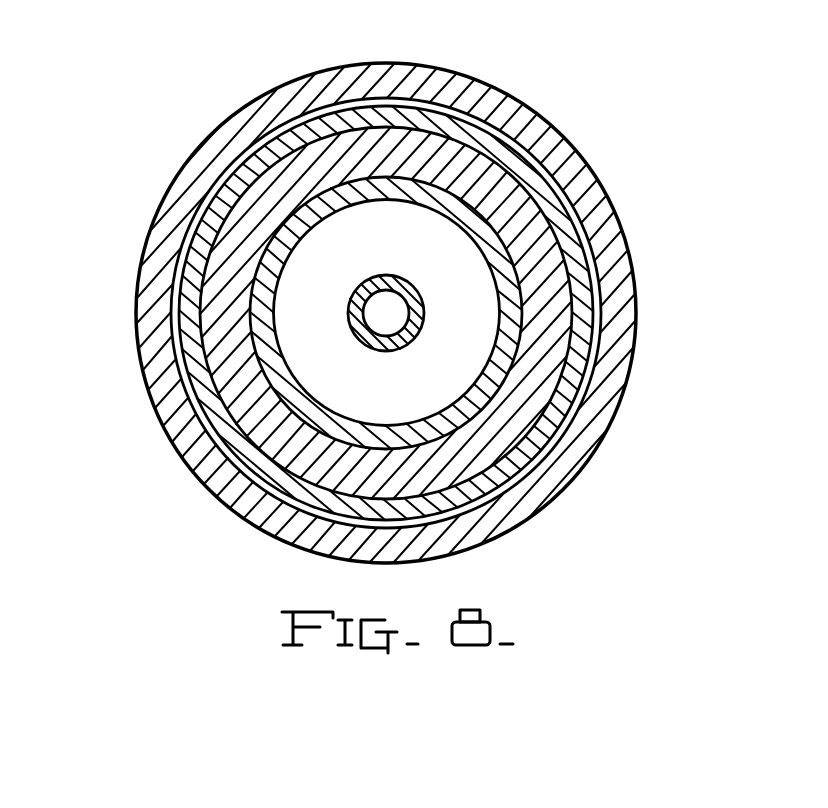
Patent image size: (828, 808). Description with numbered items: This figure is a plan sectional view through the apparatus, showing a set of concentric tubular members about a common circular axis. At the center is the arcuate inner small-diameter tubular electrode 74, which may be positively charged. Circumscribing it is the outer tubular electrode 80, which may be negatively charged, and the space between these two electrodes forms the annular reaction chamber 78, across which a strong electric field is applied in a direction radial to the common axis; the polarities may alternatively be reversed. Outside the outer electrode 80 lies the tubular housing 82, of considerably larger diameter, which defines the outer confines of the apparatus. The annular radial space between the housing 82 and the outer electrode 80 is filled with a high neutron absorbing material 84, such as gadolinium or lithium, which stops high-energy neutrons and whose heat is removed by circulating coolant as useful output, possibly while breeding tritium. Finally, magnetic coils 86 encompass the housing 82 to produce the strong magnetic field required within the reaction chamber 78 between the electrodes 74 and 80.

The inner tubular electrode 74 is at (415, 310).
The annular reaction chamber 78 is at (407, 395).
The outer tubular electrode 80 is at (395, 436).
The tubular housing 82 is at (530, 448).
The high neutron absorbing material 84 is at (215, 350).
The magnetic coils 86 is at (206, 463).